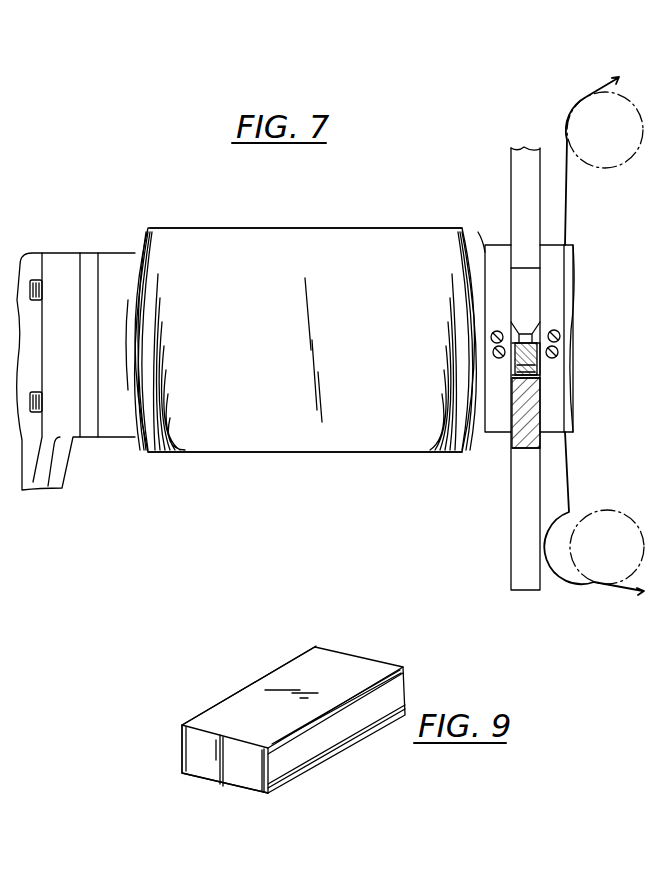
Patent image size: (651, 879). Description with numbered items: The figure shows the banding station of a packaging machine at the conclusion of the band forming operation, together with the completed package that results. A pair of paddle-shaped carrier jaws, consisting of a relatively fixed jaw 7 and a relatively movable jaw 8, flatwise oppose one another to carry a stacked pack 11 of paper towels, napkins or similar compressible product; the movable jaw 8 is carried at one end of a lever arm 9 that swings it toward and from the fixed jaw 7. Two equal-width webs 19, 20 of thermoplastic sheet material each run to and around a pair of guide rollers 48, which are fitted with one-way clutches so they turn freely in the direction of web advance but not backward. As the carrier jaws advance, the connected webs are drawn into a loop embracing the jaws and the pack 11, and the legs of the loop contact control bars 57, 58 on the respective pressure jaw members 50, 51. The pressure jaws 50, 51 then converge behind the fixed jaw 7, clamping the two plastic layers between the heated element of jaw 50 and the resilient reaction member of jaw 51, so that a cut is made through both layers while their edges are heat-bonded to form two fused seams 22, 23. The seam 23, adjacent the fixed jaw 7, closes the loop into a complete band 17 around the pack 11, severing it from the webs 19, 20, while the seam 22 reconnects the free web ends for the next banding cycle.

In FIG. 7, the fixed jaw 7 is at (480, 252).
In FIG. 7, the movable jaw 8 is at (135, 258).
In FIG. 7, the lever arm 9 is at (60, 484).
In FIG. 7, the stacked pack 11 is at (262, 359).
In FIG. 9, the stacked pack 11 is at (218, 768).
In FIG. 9, the band 17 is at (309, 682).
In FIG. 9, the web 19 is at (238, 700).
In FIG. 7, the web 20 is at (273, 453).
In FIG. 9, the web 20 is at (250, 793).
In FIG. 7, the heat-bonded seam 22 is at (122, 340).
In FIG. 9, the heat-bonded seam 22 is at (176, 748).
In FIG. 9, the heat-bonded seam 23 is at (295, 762).
In FIG. 7, the guide rollers 48 is at (607, 166).
In FIG. 7, the pressure jaw member 50 is at (550, 286).
In FIG. 7, the pressure jaw member 51 is at (545, 366).
In FIG. 7, the control bar 57 is at (498, 331).
In FIG. 7, the control bar 58 is at (556, 352).